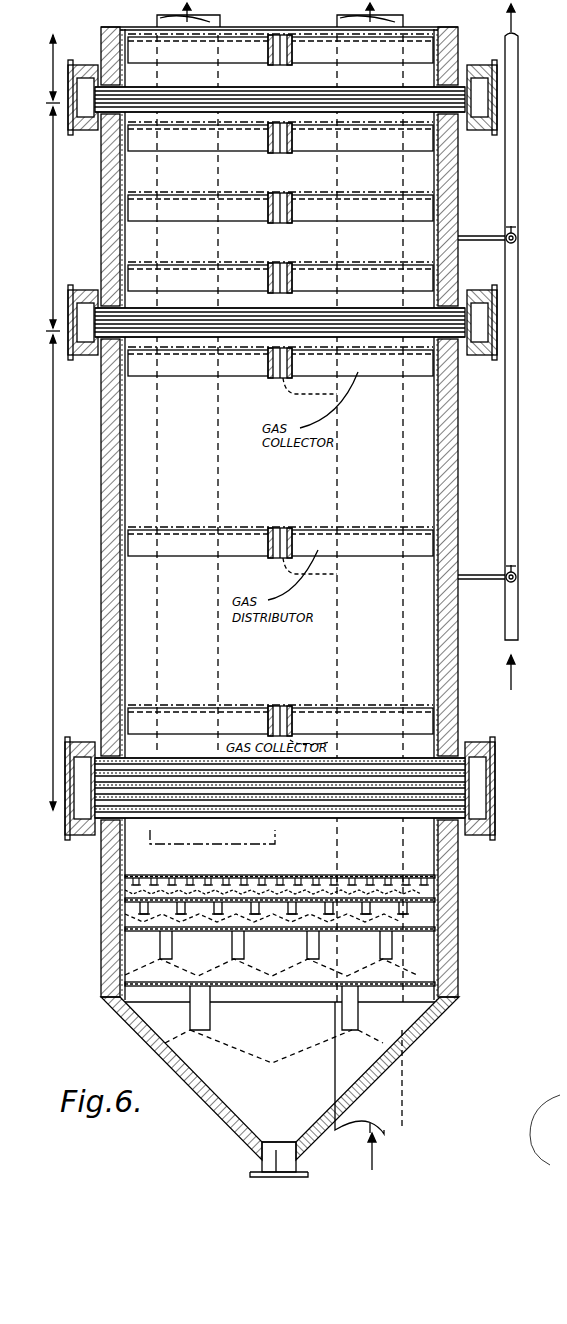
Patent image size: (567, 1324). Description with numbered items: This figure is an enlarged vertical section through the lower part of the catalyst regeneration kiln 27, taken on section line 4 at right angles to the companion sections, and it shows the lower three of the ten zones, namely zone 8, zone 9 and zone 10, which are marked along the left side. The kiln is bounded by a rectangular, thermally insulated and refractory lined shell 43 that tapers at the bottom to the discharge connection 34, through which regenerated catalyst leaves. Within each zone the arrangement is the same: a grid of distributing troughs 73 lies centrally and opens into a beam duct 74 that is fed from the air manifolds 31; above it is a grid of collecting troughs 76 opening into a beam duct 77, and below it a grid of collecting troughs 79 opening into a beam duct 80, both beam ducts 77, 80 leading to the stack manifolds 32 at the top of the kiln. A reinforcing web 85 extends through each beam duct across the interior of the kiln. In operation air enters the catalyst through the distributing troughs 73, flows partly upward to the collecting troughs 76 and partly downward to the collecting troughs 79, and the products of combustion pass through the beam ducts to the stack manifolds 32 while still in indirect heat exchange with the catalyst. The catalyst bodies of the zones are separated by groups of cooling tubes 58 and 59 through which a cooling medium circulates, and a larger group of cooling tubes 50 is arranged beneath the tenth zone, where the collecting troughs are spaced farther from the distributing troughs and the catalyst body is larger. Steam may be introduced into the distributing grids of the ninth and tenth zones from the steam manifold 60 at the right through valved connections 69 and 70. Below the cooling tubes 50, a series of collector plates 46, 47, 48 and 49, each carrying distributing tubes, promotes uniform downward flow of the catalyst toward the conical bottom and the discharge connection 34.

The section line 4- 4 is at (148, 6).
The zone 8 is at (57, 64).
The zone 9 is at (57, 219).
The zone 10 is at (57, 572).
The kiln 27 is at (458, 900).
The air manifold 31 is at (395, 1093).
The stack manifold 32 is at (205, 27).
The discharge connection 34 is at (300, 1170).
The shell 43 is at (455, 476).
The collector plate 46 is at (208, 874).
The collector plate 47 is at (360, 896).
The collector plate 48 is at (255, 934).
The collector plate 49 is at (222, 1000).
The group of cooling tubes 50 is at (300, 818).
The group of cooling tubes 58 is at (165, 88).
The group of cooling tubes 59 is at (206, 304).
The steam manifold 60 is at (515, 200).
The valved connection 69 is at (488, 241).
The valved connection 70 is at (478, 580).
The distributing trough 73 is at (170, 222).
The beam duct 74 is at (268, 196).
The collecting trough 76 is at (164, 146).
The beam duct 77 is at (284, 152).
The collecting trough 79 is at (216, 255).
The beam duct 80 is at (268, 262).
The reinforcing web 85 is at (288, 66).